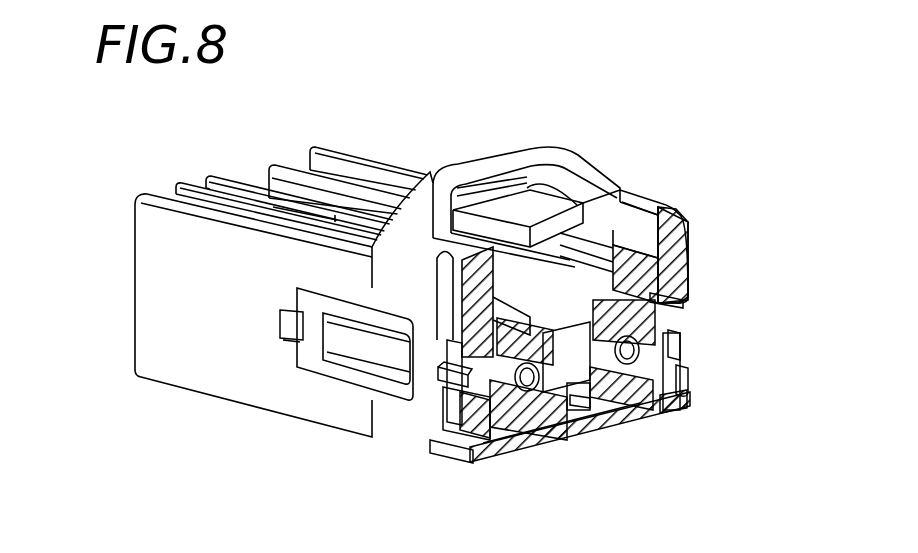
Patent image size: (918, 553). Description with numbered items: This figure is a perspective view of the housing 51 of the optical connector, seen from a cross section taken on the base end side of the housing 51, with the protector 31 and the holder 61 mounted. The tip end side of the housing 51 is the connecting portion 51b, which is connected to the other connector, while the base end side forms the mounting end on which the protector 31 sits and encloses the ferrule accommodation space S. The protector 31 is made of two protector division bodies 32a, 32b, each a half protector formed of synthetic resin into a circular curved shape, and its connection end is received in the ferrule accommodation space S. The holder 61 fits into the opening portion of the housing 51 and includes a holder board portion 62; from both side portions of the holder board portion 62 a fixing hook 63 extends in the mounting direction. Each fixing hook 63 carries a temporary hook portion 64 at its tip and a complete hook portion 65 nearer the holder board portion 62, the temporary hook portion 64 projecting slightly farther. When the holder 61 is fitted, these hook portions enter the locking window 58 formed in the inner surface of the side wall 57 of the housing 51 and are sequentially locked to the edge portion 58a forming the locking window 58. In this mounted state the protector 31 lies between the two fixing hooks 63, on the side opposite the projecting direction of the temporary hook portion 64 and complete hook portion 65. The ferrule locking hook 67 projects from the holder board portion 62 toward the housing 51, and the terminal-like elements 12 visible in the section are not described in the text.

The housing 51 is at (430, 158).
The connecting portion 51b is at (135, 268).
The side wall 57 is at (393, 291).
The temporary hook portion 64 is at (412, 384).
The locking window 58 is at (433, 398).
The edge portion 58a is at (437, 430).
The complete hook portion 65 is at (458, 425).
The fixing hook 63 is at (477, 447).
The terminal 12 is at (545, 425).
The protector division body 32a is at (540, 442).
The protector division body 32b is at (655, 415).
The protector 31 is at (631, 440).
The holder 61 is at (640, 420).
The holder board portion 62 is at (583, 430).
The ferrule locking hook 67 is at (576, 398).
The ferrule accommodation space S is at (687, 222).